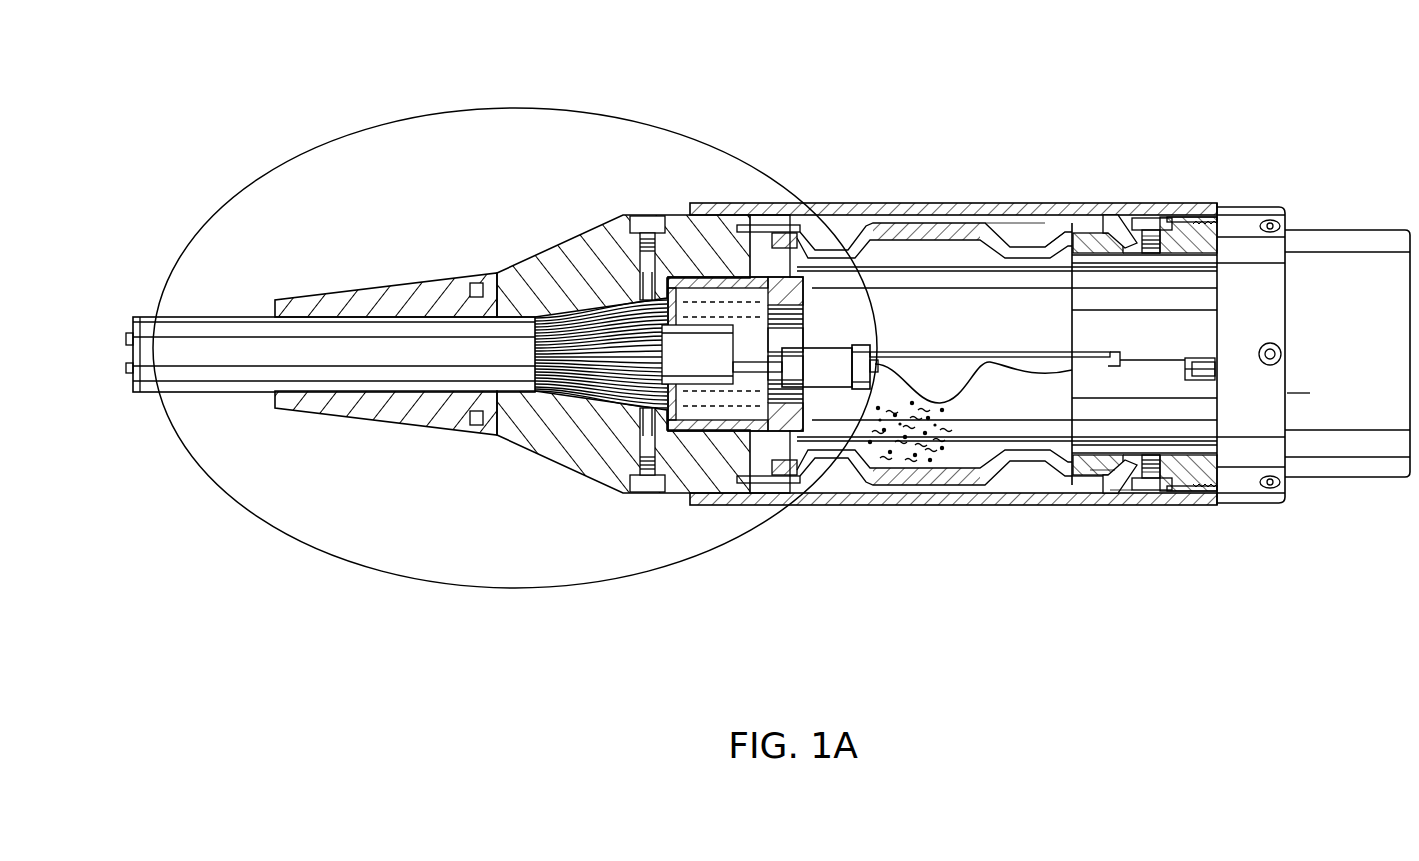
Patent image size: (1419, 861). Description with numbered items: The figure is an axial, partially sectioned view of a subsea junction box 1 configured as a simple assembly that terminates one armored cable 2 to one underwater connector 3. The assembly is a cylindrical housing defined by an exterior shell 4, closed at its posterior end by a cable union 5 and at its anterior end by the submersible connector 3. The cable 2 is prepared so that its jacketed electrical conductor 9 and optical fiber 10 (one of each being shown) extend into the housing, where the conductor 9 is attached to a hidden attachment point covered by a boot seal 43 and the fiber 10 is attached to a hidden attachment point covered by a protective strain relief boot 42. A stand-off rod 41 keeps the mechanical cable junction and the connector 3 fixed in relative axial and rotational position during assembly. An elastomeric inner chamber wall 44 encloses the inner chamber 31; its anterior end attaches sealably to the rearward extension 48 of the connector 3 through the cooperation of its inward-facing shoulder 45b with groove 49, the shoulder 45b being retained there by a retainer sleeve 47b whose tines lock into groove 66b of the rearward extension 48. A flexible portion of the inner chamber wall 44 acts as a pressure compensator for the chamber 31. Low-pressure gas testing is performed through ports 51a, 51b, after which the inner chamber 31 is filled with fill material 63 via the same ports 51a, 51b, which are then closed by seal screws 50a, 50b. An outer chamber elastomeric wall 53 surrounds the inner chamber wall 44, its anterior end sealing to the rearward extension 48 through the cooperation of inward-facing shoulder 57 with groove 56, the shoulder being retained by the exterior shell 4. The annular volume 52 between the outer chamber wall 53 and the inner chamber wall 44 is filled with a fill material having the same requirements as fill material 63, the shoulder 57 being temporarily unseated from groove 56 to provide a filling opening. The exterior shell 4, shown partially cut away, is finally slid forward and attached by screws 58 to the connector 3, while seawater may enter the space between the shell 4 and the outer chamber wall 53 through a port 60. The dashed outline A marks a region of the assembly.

The junction box 1 is at (1028, 70).
The armored cable 2 is at (193, 317).
The underwater connector 3 is at (1337, 230).
The exterior shell 4 is at (915, 505).
The cable union 5 is at (568, 455).
The jacketed electrical conductor 9 is at (930, 352).
The optical fiber 10 is at (962, 382).
The inner chamber 31 is at (975, 490).
The stand-off rod 41 is at (935, 274).
The protective strain relief boot 42 is at (1198, 358).
The boot seal 43 is at (1203, 380).
The inner chamber wall 44 is at (920, 230).
The inward-facing shoulder 45b is at (1083, 478).
The retainer sleeve 47b is at (1108, 476).
The rearward extension 48 is at (1198, 256).
The groove 49 is at (1080, 474).
The seal screw 50a is at (1152, 490).
The seal screw 50b is at (1148, 218).
The port 51a is at (1153, 455).
The port 51b is at (1150, 256).
The annular volume 52 is at (1035, 242).
The outer chamber wall 53 is at (1025, 232).
The groove 56 is at (1080, 246).
The inward-facing shoulder 57 is at (1122, 228).
The screw 58 is at (1282, 354).
The port 60 is at (1152, 216).
The fill material 63 is at (882, 458).
The groove 66b is at (1123, 490).
The region A is at (393, 578).